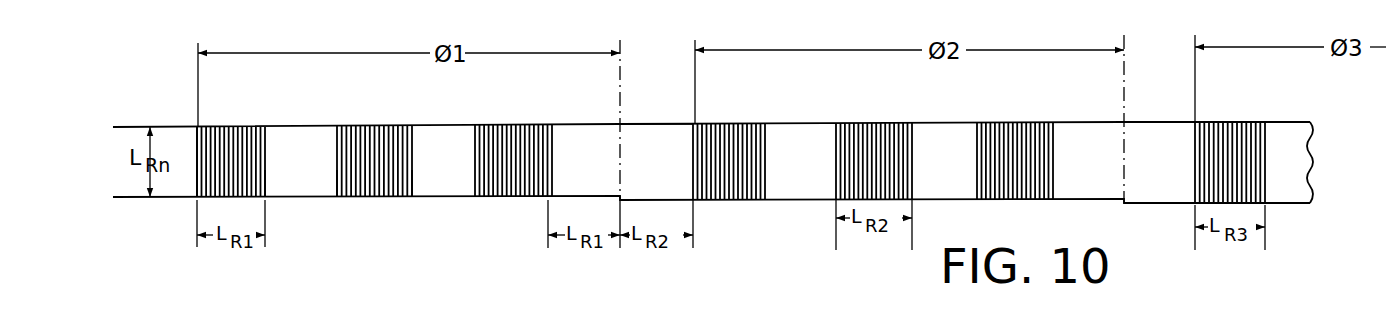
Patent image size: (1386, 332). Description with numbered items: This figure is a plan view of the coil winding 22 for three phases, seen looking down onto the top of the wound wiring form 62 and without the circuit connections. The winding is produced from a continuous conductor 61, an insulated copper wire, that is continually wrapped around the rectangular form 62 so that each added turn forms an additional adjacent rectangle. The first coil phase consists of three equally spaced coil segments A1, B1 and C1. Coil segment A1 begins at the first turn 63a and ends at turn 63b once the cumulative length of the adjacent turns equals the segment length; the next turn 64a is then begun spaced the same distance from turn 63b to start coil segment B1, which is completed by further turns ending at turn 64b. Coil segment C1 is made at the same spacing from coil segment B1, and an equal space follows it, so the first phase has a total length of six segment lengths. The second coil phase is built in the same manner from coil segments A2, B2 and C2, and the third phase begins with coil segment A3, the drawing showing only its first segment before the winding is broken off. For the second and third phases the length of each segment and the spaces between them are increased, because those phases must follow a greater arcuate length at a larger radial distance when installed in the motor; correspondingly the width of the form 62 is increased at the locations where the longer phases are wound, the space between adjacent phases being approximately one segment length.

The coil winding 22 is at (288, 35).
The continuous conductor 61 is at (197, 148).
The wiring form 62 is at (662, 127).
The first turn of coil segment A1 63a is at (197, 178).
The last turn of coil segment A1 63b is at (265, 178).
The first turn of coil segment B1 64a is at (337, 178).
The last turn of coil segment B1 64b is at (412, 178).
The first coil segment of first coil phase A1 is at (251, 124).
The second coil segment of first coil phase B1 is at (393, 124).
The third coil segment of first coil phase C1 is at (531, 123).
The first coil segment of second coil phase A2 is at (756, 123).
The second coil segment of second coil phase B2 is at (896, 121).
The third coil segment of second coil phase C2 is at (1042, 121).
The first coil segment of third coil phase A3 is at (1252, 119).